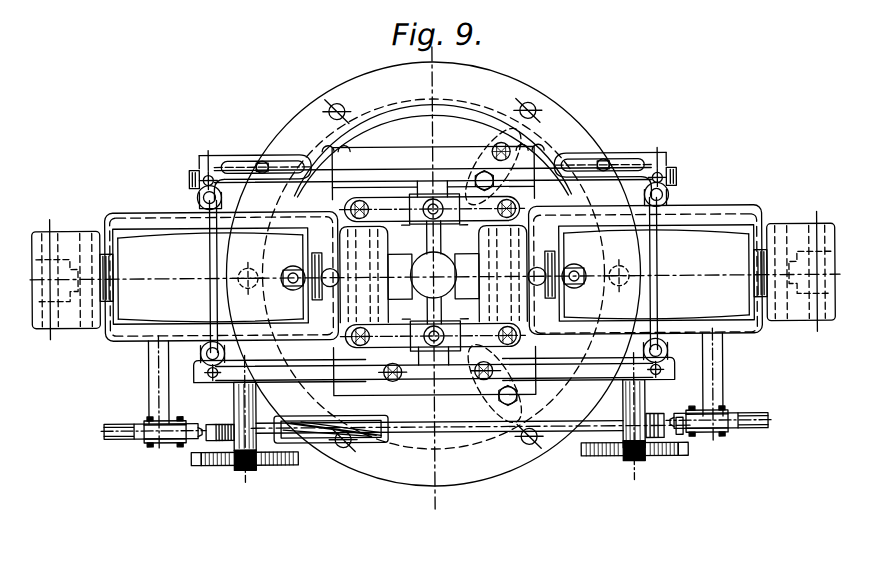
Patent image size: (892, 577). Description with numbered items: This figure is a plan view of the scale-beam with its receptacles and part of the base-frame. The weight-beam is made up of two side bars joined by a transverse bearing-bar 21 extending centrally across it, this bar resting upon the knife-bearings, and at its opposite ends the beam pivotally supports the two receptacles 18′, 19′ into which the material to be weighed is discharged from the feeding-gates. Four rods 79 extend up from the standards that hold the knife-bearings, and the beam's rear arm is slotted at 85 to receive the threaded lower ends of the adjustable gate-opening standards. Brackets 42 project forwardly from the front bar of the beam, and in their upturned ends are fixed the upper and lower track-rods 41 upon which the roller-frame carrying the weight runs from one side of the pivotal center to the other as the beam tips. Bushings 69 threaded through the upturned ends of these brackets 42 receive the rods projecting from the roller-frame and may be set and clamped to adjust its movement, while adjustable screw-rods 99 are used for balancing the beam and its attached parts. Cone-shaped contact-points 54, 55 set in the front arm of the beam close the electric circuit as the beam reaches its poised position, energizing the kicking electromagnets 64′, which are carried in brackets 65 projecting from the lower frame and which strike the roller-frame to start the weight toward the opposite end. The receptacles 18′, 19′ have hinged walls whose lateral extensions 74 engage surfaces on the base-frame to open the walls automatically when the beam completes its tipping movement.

The receptacle 18′ is at (219, 277).
The receptacle 19′ is at (647, 274).
The transverse bearing-bar 21 is at (432, 262).
The track-rods 41 is at (500, 428).
The brackets 42 is at (233, 400).
The contact-point 54 is at (500, 365).
The contact-point 55 is at (393, 383).
The electromagnets 64′ is at (178, 442).
The brackets 65 is at (135, 436).
The bushings 69 is at (220, 443).
The lateral extensions 74 is at (72, 238).
The rods 79 is at (362, 199).
The slots 85 is at (262, 162).
The adjustable screw-rods 99 is at (228, 465).